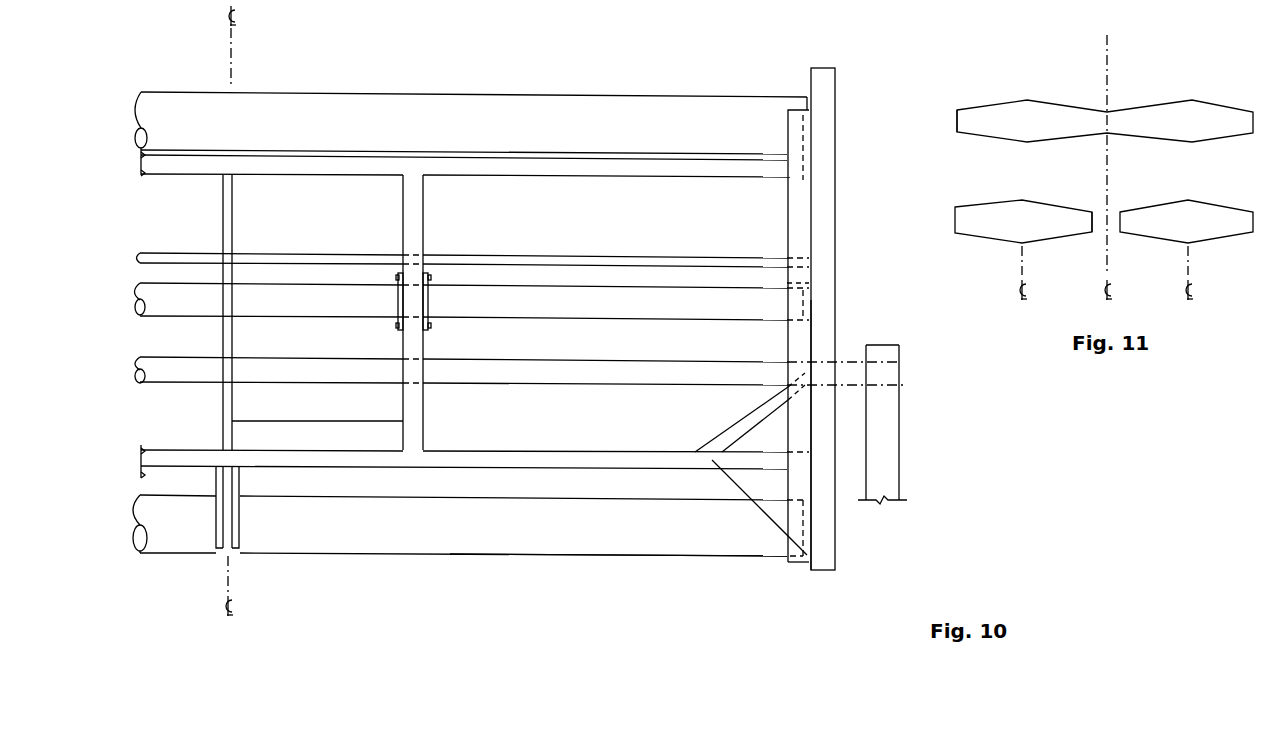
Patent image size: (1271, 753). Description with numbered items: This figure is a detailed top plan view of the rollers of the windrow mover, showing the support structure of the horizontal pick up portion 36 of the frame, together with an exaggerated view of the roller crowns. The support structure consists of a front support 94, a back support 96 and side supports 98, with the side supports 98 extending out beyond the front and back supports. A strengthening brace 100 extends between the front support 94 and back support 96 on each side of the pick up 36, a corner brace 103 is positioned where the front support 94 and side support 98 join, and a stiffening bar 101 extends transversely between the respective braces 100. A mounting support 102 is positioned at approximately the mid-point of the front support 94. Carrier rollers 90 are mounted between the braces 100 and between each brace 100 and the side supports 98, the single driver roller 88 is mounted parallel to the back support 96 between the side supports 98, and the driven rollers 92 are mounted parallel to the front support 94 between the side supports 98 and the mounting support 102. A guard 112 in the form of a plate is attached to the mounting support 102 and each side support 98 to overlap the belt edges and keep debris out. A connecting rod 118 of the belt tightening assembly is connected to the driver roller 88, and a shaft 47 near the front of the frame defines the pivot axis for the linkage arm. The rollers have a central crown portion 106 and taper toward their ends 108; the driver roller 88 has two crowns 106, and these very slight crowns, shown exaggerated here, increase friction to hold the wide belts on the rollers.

In FIG. 10, the horizontal pick up portion 36 is at (820, 535).
In FIG. 10, the shaft 47 is at (873, 404).
In FIG. 10, the driver roller 88 is at (471, 115).
In FIG. 10, the carrier roller 90 is at (737, 305).
In FIG. 10, the driven roller 92 is at (747, 533).
In FIG. 10, the front support 94 is at (807, 555).
In FIG. 10, the back support 96 is at (777, 175).
In FIG. 10, the side support 98 is at (824, 185).
In FIG. 10, the strengthening brace 100 is at (454, 250).
In FIG. 10, the stiffening bar 101 is at (451, 431).
In FIG. 10, the mounting support 102 is at (162, 361).
In FIG. 10, the corner brace 103 is at (740, 420).
In FIG. 10, the crown portion 106 is at (618, 573).
In FIG. 11, the crown portion 106 is at (1104, 155).
In FIG. 10, the roller end 108 is at (497, 530).
In FIG. 11, the roller end 108 is at (1101, 111).
In FIG. 10, the guard 112 is at (800, 283).
In FIG. 10, the connecting rod 118 is at (750, 263).